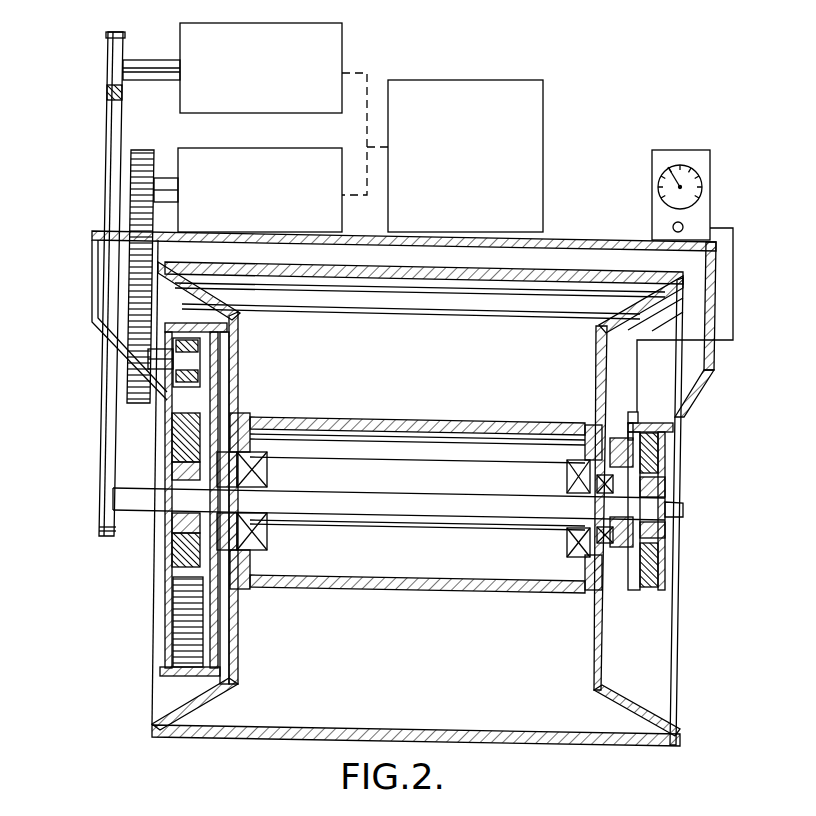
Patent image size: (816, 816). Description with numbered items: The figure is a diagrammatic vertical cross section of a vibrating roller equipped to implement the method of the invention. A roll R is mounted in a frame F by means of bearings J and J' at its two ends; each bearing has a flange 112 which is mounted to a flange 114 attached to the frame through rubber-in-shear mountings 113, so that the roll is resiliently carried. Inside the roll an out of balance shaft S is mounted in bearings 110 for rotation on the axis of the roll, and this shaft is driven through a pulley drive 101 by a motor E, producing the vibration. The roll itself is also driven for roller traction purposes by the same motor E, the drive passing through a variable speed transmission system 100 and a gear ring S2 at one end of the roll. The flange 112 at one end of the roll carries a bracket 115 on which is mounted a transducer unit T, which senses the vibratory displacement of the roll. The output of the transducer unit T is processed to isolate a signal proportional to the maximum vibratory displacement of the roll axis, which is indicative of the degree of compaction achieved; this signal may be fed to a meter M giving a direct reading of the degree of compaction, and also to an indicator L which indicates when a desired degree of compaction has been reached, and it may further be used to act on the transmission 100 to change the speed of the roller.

The pulley drive 101 is at (117, 46).
The variable speed transmission system 100 is at (272, 207).
The motor E is at (466, 174).
The meter M is at (704, 150).
The indicator L is at (683, 226).
The frame F is at (614, 242).
The roll R is at (410, 361).
The out of balance shaft S is at (406, 498).
The gear ring S2 is at (175, 648).
The bearing J is at (173, 503).
The bearing J' is at (666, 506).
The bearings 110 is at (268, 470).
The flange 112 is at (180, 578).
The rubber-in-shear mountings 113 is at (190, 423).
The flange 114 is at (213, 403).
The bracket 115 is at (625, 424).
The transducer unit T is at (627, 420).